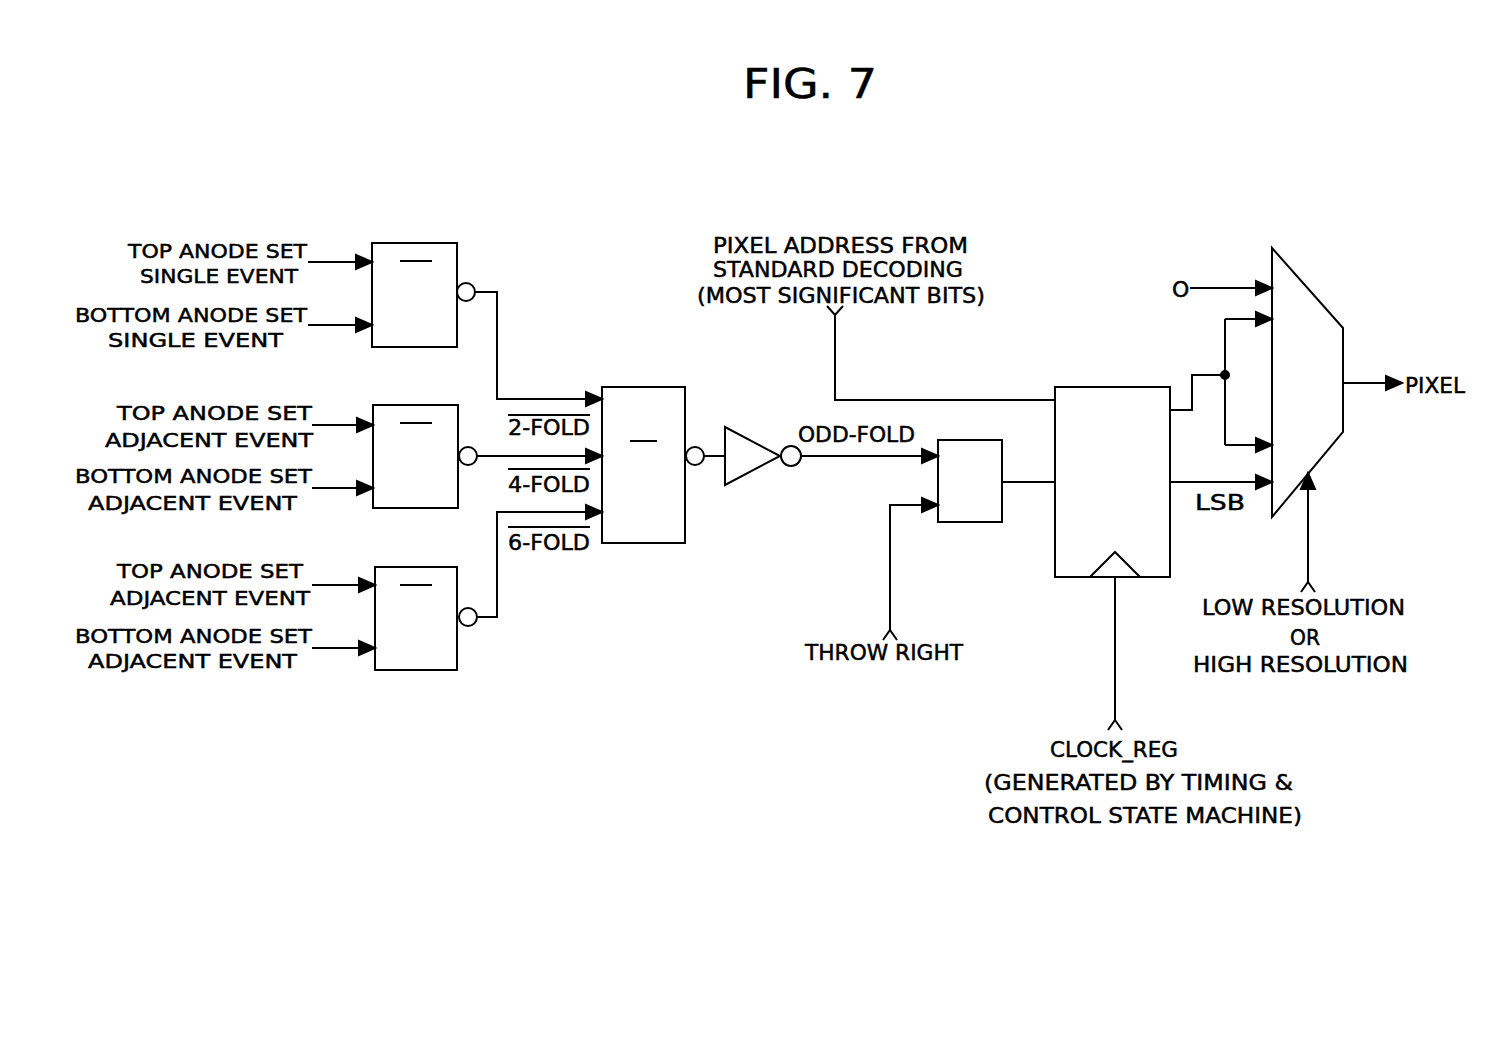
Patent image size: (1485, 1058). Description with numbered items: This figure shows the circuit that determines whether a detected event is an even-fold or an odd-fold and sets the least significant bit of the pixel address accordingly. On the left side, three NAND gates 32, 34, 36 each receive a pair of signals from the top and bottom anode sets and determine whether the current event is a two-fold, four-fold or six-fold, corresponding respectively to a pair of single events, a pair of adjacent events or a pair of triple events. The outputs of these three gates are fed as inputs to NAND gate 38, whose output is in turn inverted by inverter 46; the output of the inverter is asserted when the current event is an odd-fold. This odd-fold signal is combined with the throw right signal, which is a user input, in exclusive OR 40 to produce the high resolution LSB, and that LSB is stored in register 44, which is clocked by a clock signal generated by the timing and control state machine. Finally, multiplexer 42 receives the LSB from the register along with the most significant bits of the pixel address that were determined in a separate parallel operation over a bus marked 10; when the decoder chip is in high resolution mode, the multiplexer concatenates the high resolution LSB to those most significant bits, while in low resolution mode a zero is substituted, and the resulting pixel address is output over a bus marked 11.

The NAND gate 32 is at (427, 243).
The NAND gate 34 is at (418, 405).
The NAND gate 36 is at (432, 670).
The NAND gate 38 is at (665, 543).
The inverter 46 is at (748, 481).
The exclusive OR 40 is at (978, 522).
The register 44 is at (1135, 387).
The multiplexer 42 is at (1318, 298).
The pixel address bus (10 bits) 10 is at (960, 387).
The pixel output bus (11 bits) 11 is at (1358, 397).